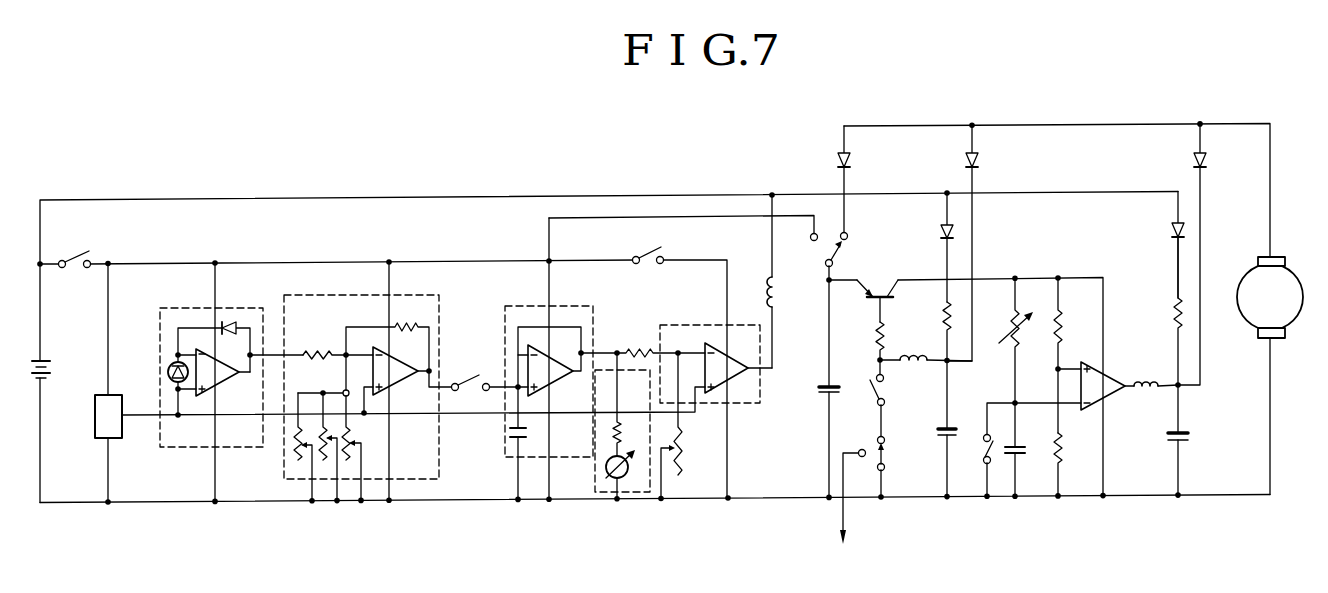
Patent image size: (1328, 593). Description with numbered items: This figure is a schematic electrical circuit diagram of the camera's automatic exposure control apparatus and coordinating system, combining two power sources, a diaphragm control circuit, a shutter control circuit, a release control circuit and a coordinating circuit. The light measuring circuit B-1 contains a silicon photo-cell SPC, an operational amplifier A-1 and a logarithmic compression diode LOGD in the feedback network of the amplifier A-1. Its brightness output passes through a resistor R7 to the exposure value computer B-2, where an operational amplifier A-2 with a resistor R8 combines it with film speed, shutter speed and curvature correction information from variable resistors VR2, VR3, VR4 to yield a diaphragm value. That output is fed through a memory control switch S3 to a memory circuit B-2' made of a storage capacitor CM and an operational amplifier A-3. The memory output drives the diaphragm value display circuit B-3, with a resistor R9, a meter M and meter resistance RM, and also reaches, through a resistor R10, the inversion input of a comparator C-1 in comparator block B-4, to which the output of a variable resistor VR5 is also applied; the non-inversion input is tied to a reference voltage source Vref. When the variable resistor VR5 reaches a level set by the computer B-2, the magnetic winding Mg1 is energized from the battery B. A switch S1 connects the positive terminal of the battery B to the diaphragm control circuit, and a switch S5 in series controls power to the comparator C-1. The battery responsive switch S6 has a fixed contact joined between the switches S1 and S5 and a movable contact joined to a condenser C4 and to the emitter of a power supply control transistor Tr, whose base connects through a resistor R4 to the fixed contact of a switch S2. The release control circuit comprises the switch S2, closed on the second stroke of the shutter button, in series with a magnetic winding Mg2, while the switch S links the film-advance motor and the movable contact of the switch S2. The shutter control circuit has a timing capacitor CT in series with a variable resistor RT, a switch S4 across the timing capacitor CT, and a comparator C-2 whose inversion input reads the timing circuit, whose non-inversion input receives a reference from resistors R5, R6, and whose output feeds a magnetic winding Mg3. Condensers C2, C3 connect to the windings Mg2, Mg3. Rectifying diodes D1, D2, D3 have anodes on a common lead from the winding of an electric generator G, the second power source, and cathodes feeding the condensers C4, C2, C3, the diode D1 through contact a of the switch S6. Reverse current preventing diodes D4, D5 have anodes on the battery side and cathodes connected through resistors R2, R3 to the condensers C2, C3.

The switch S1 is at (75, 270).
The battery B is at (48, 373).
The reference voltage source Vref is at (122, 431).
The silicon photo-cell SPC is at (157, 383).
The logarithmic compression diode LOGD is at (221, 327).
The operational amplifier A-1 is at (240, 372).
The light measuring circuit B-1 is at (211, 377).
The resistor R7 is at (338, 343).
The resistor R8 is at (400, 344).
The operational amplifier A-2 is at (396, 380).
The exposure value computer B-2 is at (361, 387).
The variable resistor VR2 is at (337, 443).
The variable resistor VR3 is at (337, 462).
The variable resistor VR4 is at (337, 464).
The memory control switch S3 is at (490, 374).
The storage capacitor CM is at (509, 443).
The operational amplifier A-3 is at (551, 361).
The memory circuit B-2' is at (549, 381).
The resistor R10 is at (643, 341).
The diaphragm value display circuit B-3 is at (622, 431).
The resistor R9 is at (627, 404).
The meter M is at (626, 474).
The meter resistance RM is at (632, 516).
The variable resistor VR5 is at (690, 426).
The comparator C-1 is at (738, 368).
The comparator circuit B-4 is at (710, 365).
The switch S5 is at (648, 269).
The magnetic winding Mg1 is at (787, 281).
The rectifying diode D1 is at (855, 179).
The rectifying diode D2 is at (973, 243).
The rectifying diode D3 is at (1203, 254).
The reverse current preventing diode D4 is at (933, 247).
The reverse current preventing diode D5 is at (1165, 245).
The battery responsive switch S6 is at (829, 304).
The power supply control transistor Tr is at (863, 291).
The resistor R4 is at (870, 350).
The magnetic winding Mg2 is at (926, 345).
The resistor R2 is at (937, 365).
The condenser C4 is at (818, 438).
The switch S2 is at (887, 406).
The switch S is at (871, 486).
The condenser C2 is at (938, 459).
The variable resistor RT is at (1020, 362).
The timing capacitor CT is at (1026, 468).
The switch S4 is at (1022, 449).
The resistor R5 is at (1068, 355).
The resistor R6 is at (1068, 464).
The comparator C-2 is at (1107, 386).
The magnetic winding Mg3 is at (1157, 400).
The resistor R3 is at (1167, 335).
The condenser C3 is at (1189, 461).
The electric generator G is at (1270, 297).